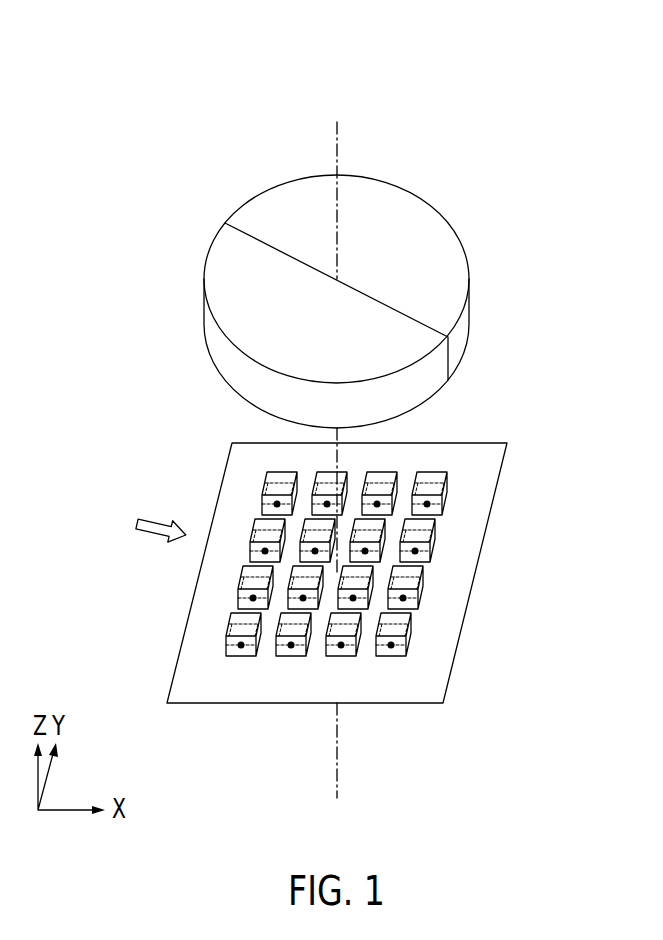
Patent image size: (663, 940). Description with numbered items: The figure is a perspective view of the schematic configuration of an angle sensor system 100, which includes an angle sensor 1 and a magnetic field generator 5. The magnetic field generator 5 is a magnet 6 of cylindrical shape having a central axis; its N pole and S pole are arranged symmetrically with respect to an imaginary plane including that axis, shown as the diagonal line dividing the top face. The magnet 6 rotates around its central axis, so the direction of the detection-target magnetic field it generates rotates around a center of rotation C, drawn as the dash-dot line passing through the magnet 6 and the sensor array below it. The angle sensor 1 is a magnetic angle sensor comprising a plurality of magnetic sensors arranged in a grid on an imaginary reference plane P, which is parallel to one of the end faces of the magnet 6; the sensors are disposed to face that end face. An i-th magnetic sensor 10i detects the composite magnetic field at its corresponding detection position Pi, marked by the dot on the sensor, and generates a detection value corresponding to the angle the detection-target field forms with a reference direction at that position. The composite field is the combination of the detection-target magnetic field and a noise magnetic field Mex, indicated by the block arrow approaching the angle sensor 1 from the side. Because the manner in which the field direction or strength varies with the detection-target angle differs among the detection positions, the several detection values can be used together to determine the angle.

The angle sensor system 100 is at (340, 93).
The magnetic field generator 5 is at (381, 301).
The magnet 6 is at (472, 313).
The angle sensor 1 is at (351, 613).
The magnetic sensor 10i is at (223, 684).
The detection position Pi is at (243, 657).
The reference plane P is at (493, 443).
The center of rotation C is at (337, 755).
The noise magnetic field Mex is at (153, 518).